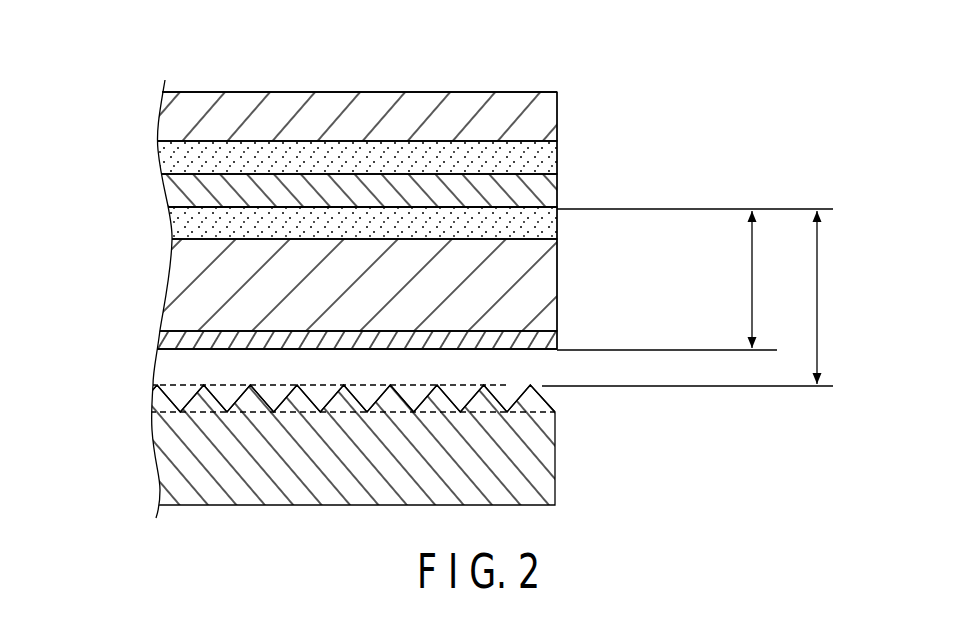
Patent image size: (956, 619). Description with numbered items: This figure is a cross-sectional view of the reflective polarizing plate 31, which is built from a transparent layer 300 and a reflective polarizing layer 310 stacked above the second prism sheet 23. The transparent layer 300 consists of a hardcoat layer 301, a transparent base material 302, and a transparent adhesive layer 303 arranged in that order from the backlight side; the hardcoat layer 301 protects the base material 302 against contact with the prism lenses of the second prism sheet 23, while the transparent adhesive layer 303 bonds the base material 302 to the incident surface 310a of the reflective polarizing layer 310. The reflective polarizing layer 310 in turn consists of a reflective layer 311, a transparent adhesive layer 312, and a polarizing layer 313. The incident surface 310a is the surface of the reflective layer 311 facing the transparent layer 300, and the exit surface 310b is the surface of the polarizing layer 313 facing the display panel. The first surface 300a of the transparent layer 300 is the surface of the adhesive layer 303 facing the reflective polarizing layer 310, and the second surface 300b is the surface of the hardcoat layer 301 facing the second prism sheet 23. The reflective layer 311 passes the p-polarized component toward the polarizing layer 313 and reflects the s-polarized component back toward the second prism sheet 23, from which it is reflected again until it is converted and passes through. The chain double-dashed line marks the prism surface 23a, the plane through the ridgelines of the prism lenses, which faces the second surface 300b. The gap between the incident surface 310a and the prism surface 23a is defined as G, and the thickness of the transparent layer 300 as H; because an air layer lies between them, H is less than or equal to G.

The reflective polarizing plate 31 is at (456, 201).
The reflective polarizing layer 310 is at (427, 149).
The polarizing layer 313 is at (558, 118).
The transparent adhesive layer 312 is at (558, 158).
The reflective layer 311 is at (558, 190).
The transparent layer 300 is at (427, 278).
The transparent adhesive layer 303 is at (558, 222).
The transparent base material 302 is at (558, 278).
The hardcoat layer 301 is at (390, 331).
The exit surface 310b is at (515, 90).
The incident surface 310a is at (207, 210).
The first surface 300a is at (252, 203).
The second surface 300b is at (207, 352).
The second prism sheet 23 is at (557, 468).
The prism surface 23a is at (514, 380).
The thickness of the transparent layer H is at (764, 279).
The gap between the incident surface and the prism surface G is at (831, 297).